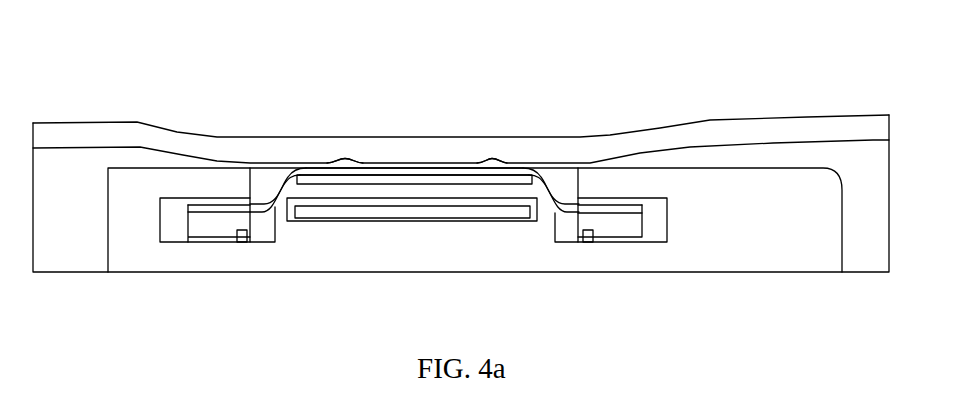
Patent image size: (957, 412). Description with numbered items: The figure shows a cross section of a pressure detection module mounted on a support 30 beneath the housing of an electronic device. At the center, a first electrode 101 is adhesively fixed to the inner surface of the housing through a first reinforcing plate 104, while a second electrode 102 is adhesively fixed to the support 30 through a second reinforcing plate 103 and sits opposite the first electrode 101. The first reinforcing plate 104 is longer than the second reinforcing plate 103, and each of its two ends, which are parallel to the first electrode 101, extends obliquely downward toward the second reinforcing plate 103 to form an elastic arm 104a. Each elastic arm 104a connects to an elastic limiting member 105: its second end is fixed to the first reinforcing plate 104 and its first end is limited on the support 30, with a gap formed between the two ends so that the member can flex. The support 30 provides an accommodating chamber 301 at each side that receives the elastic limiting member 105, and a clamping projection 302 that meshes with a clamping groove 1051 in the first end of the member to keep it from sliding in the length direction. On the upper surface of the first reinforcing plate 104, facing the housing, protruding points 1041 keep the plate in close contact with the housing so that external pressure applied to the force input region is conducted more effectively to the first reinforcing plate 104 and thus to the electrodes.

The support 30 is at (590, 180).
The accommodating chamber 301 is at (647, 198).
The clamping projection 302 is at (242, 242).
The first electrode 101 is at (387, 173).
The second electrode 102 is at (415, 202).
The second reinforcing plate 103 is at (507, 212).
The first reinforcing plate 104 is at (368, 164).
The elastic arm 104a is at (275, 206).
The protruding point 1041 is at (480, 173).
The elastic limiting member 105 is at (200, 227).
The clamping groove 1051 is at (235, 240).